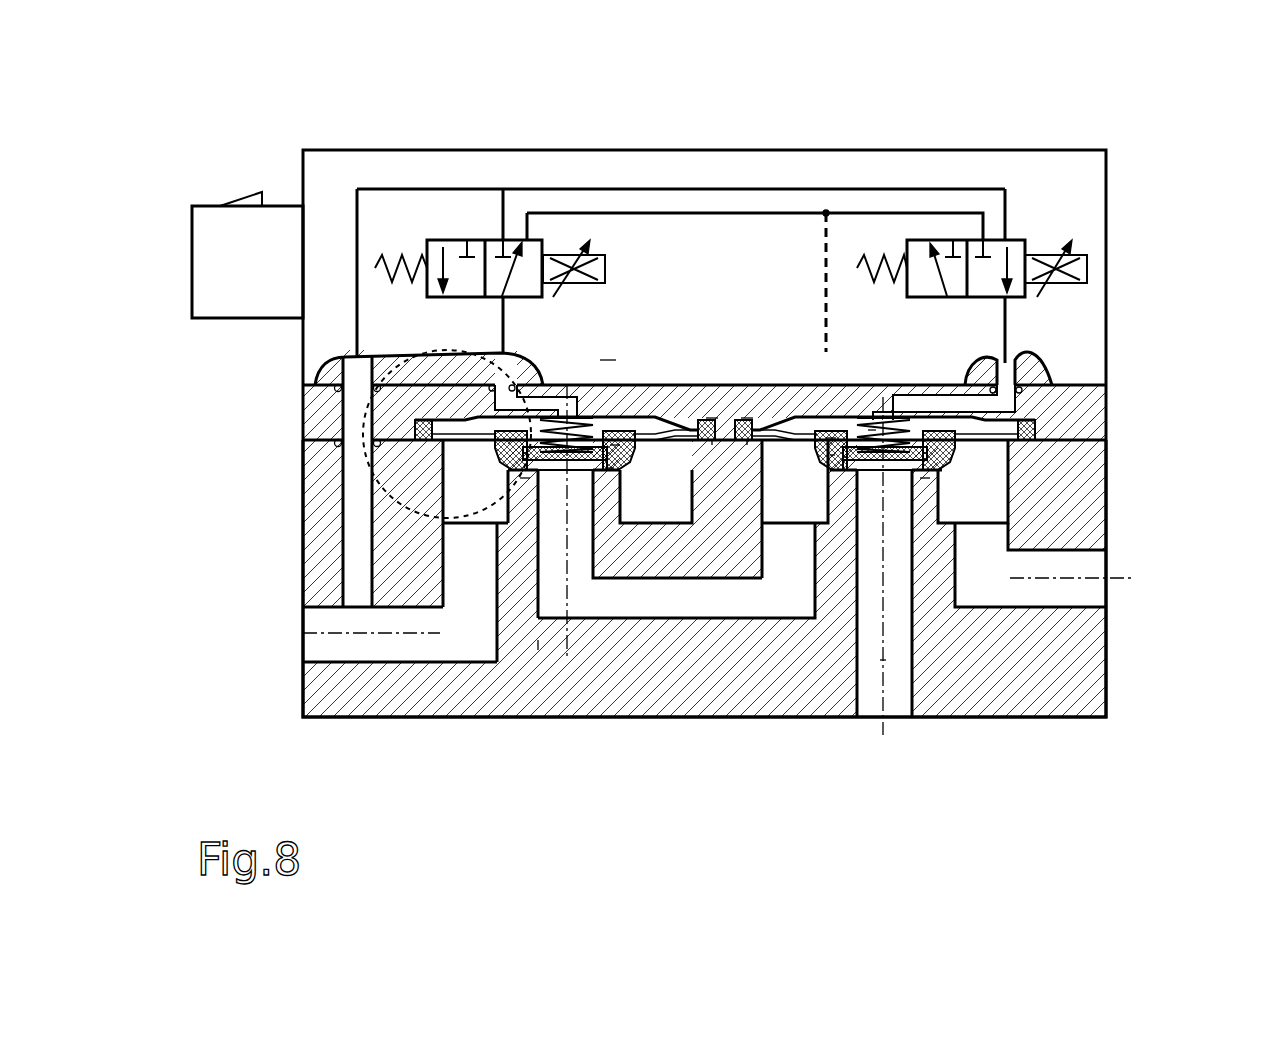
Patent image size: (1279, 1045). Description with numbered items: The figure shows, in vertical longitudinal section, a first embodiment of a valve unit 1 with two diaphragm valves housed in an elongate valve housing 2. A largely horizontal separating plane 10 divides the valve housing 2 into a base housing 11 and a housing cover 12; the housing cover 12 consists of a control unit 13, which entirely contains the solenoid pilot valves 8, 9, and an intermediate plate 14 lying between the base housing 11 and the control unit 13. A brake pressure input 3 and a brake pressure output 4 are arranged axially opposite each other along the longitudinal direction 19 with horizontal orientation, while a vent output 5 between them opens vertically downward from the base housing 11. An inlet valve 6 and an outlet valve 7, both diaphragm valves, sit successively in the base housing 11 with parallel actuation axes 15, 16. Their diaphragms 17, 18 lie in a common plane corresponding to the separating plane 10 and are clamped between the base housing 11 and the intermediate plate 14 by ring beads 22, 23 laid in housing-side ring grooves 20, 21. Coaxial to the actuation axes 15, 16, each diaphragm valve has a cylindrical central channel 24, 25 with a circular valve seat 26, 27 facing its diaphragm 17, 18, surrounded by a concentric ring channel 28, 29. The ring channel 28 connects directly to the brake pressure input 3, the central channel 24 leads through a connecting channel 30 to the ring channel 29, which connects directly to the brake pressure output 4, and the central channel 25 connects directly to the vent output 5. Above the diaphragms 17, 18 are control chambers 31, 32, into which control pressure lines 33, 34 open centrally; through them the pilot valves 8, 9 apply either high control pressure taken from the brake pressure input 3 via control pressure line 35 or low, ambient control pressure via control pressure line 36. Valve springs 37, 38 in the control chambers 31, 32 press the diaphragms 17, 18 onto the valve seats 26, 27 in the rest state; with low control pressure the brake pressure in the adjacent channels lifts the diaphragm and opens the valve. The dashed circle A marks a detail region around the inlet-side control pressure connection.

The valve unit 1 is at (244, 128).
The valve housing 2 is at (704, 638).
The base housing 11 is at (1023, 660).
The brake pressure input 3 is at (358, 647).
The brake pressure output 4 is at (1050, 592).
The vent output 5 is at (893, 680).
The inlet valve 6 is at (580, 405).
The outlet valve 7 is at (887, 341).
The pilot valve 8 is at (480, 208).
The pilot valve 9 is at (959, 208).
The separating plane 10 is at (290, 437).
The housing cover 12 is at (634, 209).
The control unit 13 is at (1058, 205).
The intermediate plate 14 is at (1065, 413).
The actuation axis 15 is at (560, 545).
The actuation axis 16 is at (910, 560).
The diaphragm 17 is at (612, 500).
The diaphragm 18 is at (833, 463).
The longitudinal direction 19 is at (680, 744).
The ring groove 20 is at (715, 394).
The ring groove 21 is at (749, 394).
The ring bead 22 is at (712, 443).
The ring bead 23 is at (737, 443).
The central channel 24 is at (553, 522).
The central channel 25 is at (860, 560).
The valve seat 26 is at (524, 499).
The valve seat 27 is at (926, 501).
The ring channel 28 is at (567, 496).
The ring channel 29 is at (885, 509).
The connecting channel 30 is at (676, 544).
The control chamber 31 is at (617, 440).
The control chamber 32 is at (830, 433).
The control pressure line 33 is at (500, 316).
The control pressure line 34 is at (1010, 325).
The control pressure line 35 is at (403, 190).
The control pressure line 36 is at (583, 213).
The valve spring 37 is at (611, 340).
The valve spring 38 is at (872, 428).
The detail region A is at (395, 495).